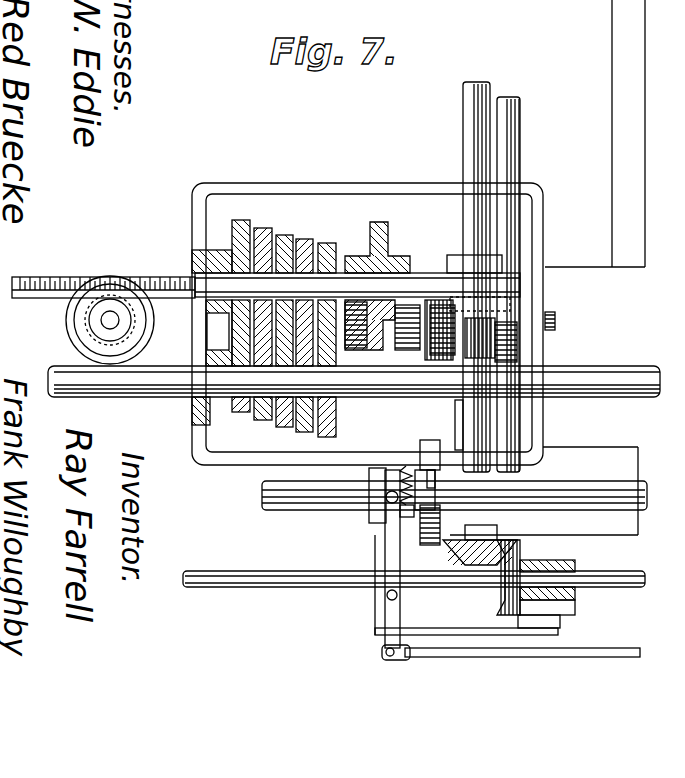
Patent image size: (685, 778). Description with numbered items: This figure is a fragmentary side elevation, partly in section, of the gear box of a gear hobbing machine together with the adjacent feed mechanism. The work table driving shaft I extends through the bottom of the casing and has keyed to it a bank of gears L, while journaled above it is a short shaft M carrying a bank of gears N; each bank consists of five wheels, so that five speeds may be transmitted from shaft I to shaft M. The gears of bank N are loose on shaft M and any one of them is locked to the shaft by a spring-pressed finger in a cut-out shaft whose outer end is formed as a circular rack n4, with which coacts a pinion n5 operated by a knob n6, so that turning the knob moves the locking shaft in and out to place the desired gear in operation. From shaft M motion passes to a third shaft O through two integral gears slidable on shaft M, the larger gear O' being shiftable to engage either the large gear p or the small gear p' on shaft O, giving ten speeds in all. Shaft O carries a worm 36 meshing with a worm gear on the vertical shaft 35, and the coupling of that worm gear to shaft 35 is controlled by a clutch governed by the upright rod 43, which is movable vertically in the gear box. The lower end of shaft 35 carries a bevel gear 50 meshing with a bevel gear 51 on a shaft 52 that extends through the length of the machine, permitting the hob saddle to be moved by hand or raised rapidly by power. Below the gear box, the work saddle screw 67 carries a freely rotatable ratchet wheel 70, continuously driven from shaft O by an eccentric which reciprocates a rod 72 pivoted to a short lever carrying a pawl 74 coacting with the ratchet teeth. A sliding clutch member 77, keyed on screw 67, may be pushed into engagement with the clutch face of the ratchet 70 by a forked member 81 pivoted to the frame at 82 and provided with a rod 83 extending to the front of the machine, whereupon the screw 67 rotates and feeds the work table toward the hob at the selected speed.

The circular rack n4 is at (50, 278).
The pinion n5 is at (85, 322).
The knob n6 is at (92, 344).
The short shaft M is at (192, 278).
The bank of gears N is at (284, 283).
The bank of gears L is at (284, 425).
The third shaft O is at (470, 282).
The large gear O' is at (380, 227).
The large gear p is at (356, 368).
The small gear p' is at (418, 367).
The worm 36 is at (478, 322).
The rod 72 is at (455, 418).
The shaft 35 is at (468, 150).
The upright rod 43 is at (516, 100).
The driving shaft I is at (145, 398).
The screw 67 is at (285, 507).
The sliding clutch member 77 is at (375, 490).
The pawl 74 is at (405, 510).
The ratchet wheel 70 is at (430, 540).
The bevel gear 50 is at (500, 548).
The bevel gear 51 is at (522, 566).
The shaft 52 is at (628, 560).
The forked member 81 is at (388, 612).
The pivot 82 is at (399, 596).
The rod 83 is at (522, 653).